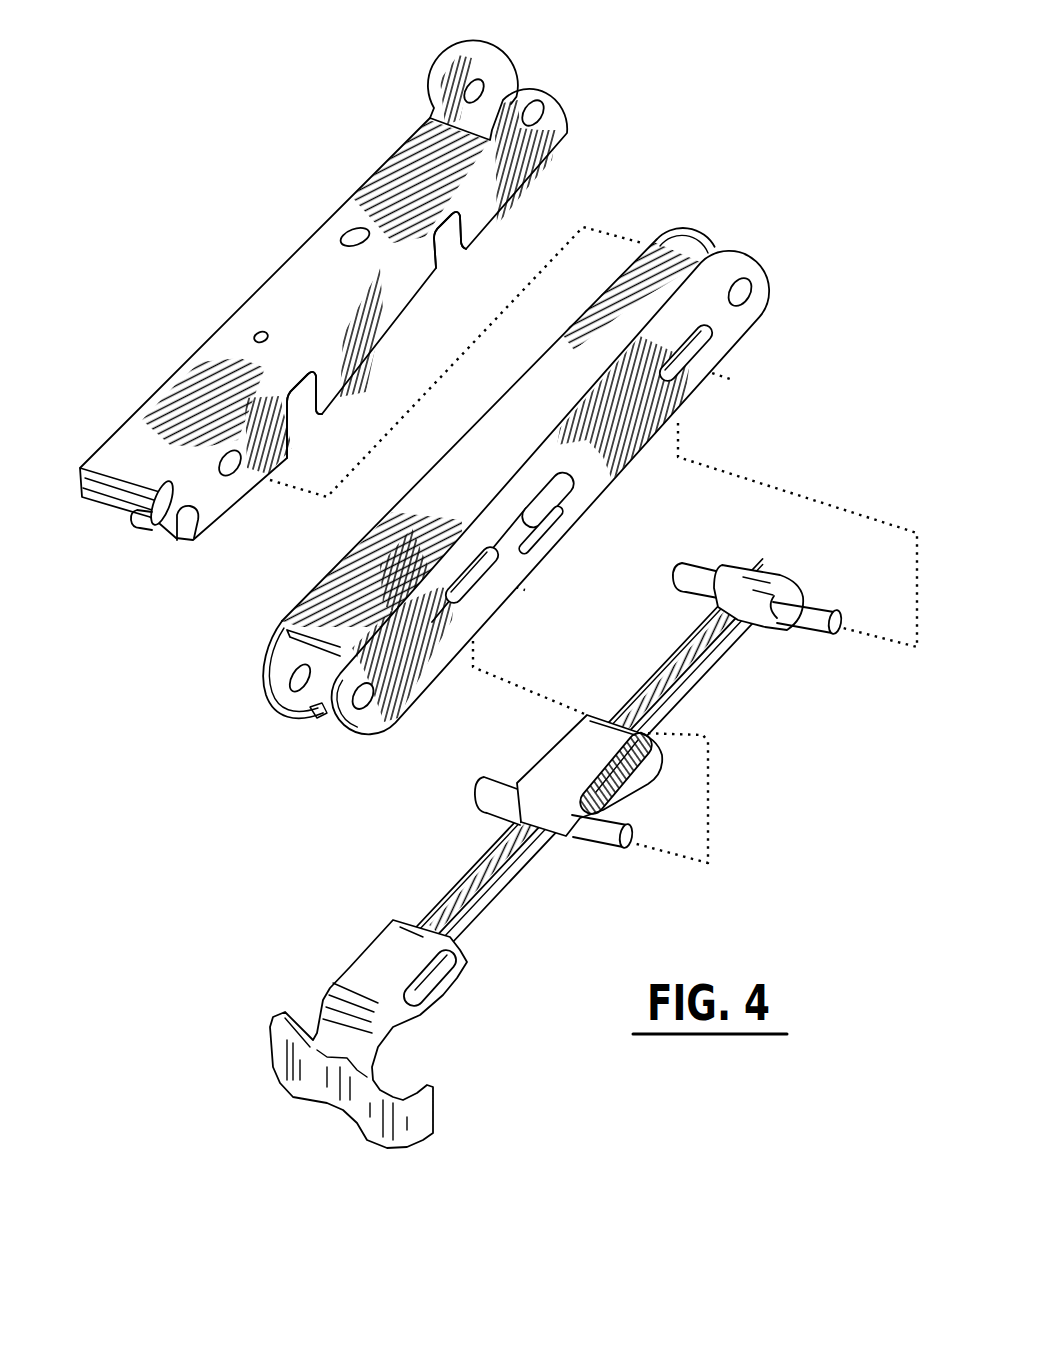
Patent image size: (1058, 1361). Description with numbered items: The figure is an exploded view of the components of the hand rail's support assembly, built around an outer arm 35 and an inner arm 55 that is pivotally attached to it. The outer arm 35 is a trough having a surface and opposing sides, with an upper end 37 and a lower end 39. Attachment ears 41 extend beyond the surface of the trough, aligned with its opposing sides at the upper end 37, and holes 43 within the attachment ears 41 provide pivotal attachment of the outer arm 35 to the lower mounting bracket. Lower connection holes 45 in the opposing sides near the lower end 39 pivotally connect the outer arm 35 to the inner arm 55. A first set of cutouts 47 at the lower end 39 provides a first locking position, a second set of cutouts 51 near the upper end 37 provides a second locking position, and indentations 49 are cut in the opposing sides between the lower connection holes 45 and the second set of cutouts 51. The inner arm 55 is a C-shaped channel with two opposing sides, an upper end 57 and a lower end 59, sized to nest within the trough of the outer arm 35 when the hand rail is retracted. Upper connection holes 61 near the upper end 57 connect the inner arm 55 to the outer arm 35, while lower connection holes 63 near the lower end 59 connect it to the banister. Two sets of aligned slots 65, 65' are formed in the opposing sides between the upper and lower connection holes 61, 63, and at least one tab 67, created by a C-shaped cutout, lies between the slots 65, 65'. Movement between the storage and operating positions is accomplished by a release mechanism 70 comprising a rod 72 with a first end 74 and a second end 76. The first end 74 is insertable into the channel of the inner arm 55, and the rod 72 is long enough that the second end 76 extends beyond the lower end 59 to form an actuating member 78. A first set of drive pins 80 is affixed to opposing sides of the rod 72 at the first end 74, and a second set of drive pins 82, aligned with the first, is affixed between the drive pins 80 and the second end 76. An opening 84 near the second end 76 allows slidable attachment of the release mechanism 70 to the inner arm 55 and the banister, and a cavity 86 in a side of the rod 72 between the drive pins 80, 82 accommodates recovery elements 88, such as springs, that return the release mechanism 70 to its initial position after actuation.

The outer arm 35 is at (327, 257).
The upper end 37 is at (570, 117).
The lower end 39 is at (160, 527).
The attachment ears 41 is at (527, 67).
The holes 43 is at (537, 107).
The lower connection holes 45 is at (231, 477).
The first set of cutouts 47 is at (177, 527).
The indentations 49 is at (300, 413).
The second set of cutouts 51 is at (450, 257).
The inner arm 55 is at (427, 682).
The upper end 57 is at (760, 260).
The lower end 59 is at (267, 712).
The upper connection holes 61 is at (750, 295).
The lower connection holes 63 is at (365, 713).
The aligned slots 65 is at (494, 593).
The aligned slots 65' is at (742, 353).
The tab 67 is at (538, 503).
The release mechanism 70 is at (465, 872).
The rod 72 is at (510, 825).
The first end 74 is at (760, 570).
The second end 76 is at (340, 1017).
The actuating member 78 is at (360, 1127).
The first set of drive pins 80 is at (810, 617).
The second set of drive pins 82 is at (593, 837).
The opening 84 is at (420, 987).
The cavity 86 is at (617, 763).
The recovery elements 88 is at (633, 787).